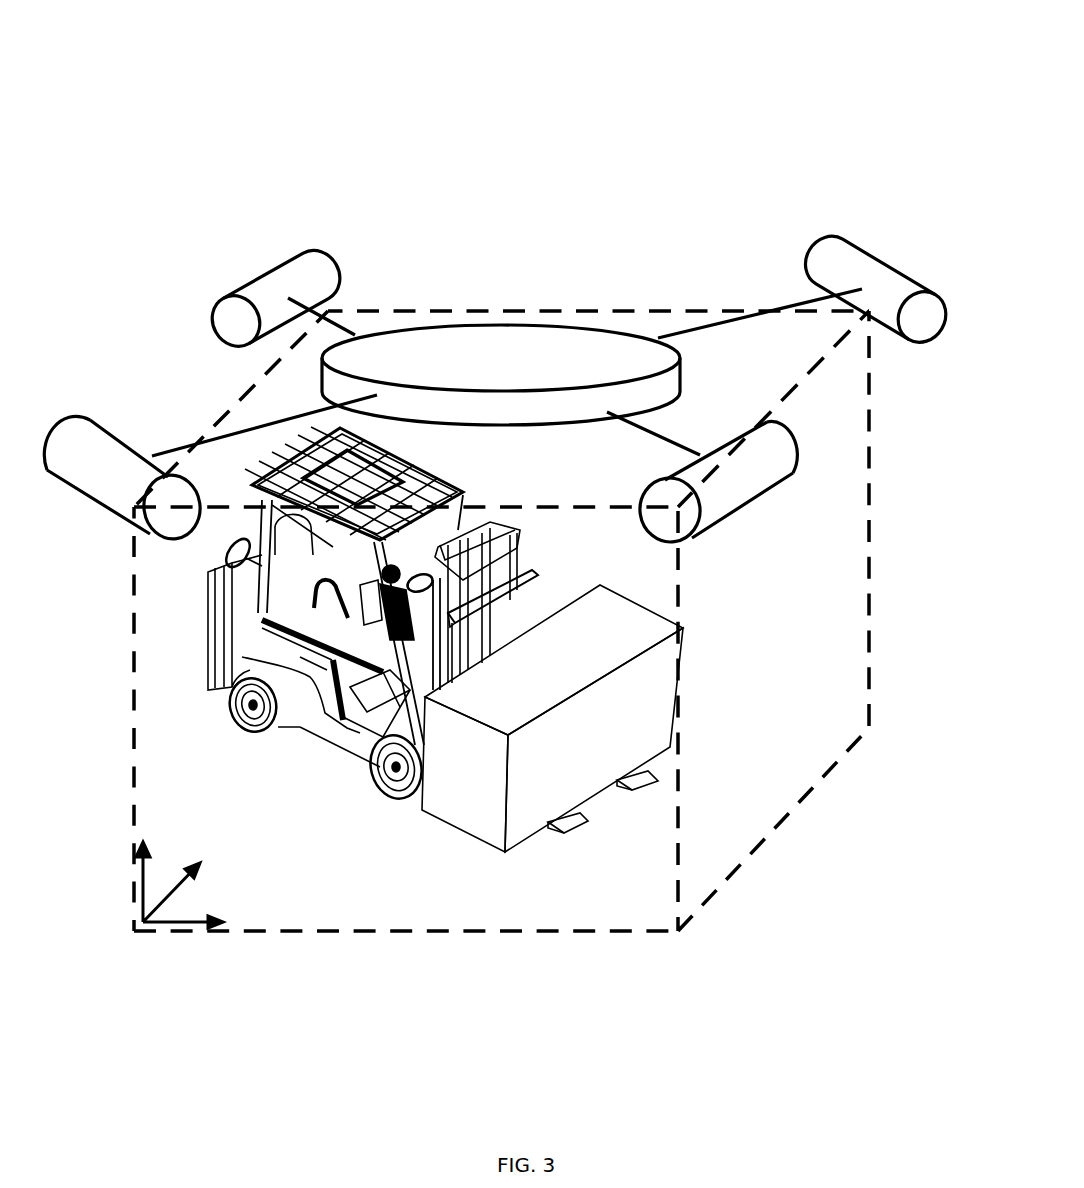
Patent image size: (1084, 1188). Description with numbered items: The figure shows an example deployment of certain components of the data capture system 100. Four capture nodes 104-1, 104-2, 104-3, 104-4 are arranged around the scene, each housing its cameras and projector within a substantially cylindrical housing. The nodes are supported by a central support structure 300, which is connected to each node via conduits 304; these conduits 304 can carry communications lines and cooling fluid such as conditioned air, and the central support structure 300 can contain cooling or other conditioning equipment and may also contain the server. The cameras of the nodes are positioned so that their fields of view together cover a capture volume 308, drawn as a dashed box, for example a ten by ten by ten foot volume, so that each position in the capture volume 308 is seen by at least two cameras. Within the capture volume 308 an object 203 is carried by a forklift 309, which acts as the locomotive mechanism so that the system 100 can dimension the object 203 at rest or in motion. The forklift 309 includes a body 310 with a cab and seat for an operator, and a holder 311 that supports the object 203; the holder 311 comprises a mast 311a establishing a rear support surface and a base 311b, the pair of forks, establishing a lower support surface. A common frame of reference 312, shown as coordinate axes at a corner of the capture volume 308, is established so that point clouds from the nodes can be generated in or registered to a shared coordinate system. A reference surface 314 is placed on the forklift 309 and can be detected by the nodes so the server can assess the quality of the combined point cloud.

The system 100 is at (680, 92).
The capture node 104-1 is at (299, 247).
The capture node 104-2 is at (92, 415).
The capture node 104-3 is at (727, 528).
The capture node 104-4 is at (902, 268).
The central support structure 300 is at (546, 338).
The conduits 304 is at (670, 438).
The capture volume 308 is at (782, 823).
The forklift 309 is at (223, 702).
The body 310 is at (315, 707).
The holder 311 is at (546, 719).
The mast 311a is at (450, 622).
The base 311b is at (567, 833).
The common frame of reference 312 is at (162, 927).
The reference surface 314 is at (373, 492).
The object 203 is at (472, 800).